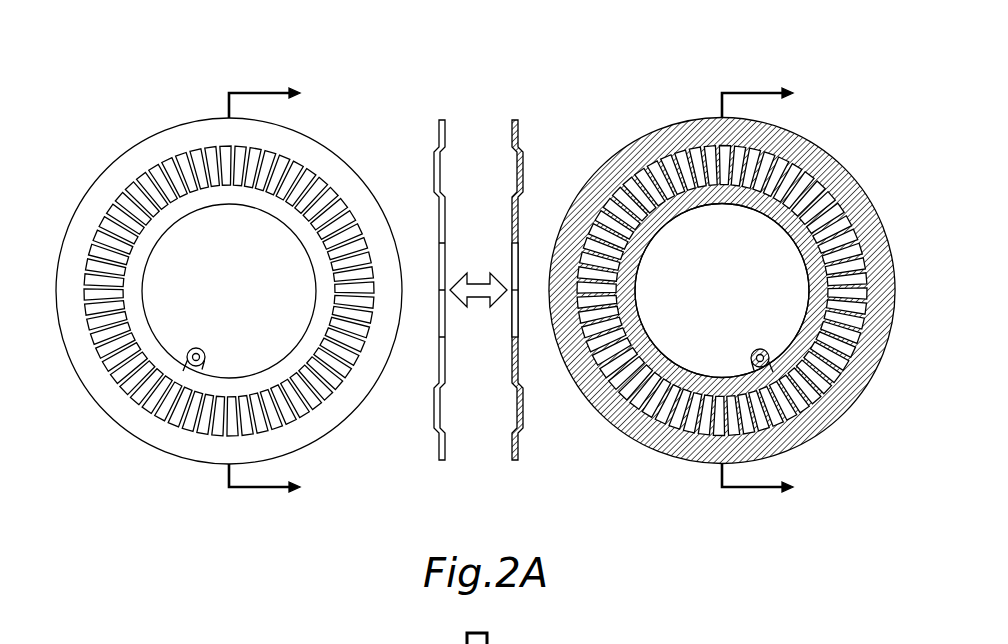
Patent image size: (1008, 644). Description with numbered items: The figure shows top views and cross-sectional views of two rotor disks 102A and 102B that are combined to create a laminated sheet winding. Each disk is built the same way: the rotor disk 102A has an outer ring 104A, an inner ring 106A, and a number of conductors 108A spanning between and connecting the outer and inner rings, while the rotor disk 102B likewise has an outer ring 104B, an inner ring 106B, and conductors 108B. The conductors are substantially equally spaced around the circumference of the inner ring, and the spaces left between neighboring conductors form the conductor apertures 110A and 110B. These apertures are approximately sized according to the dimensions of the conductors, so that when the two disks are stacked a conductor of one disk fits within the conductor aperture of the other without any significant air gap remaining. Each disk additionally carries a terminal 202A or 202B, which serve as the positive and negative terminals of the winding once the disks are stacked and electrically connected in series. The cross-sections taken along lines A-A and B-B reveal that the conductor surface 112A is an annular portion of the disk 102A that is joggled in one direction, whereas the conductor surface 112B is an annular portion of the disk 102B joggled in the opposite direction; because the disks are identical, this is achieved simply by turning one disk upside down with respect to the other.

The rotor disk 102A is at (190, 82).
The outer ring 104A is at (90, 195).
The inner ring 106A is at (132, 299).
The conductors 108A is at (187, 172).
The conductor apertures 110A is at (150, 408).
The conductor surface 112A is at (425, 173).
The terminal 202A is at (207, 363).
The rotor disk 102B is at (702, 80).
The outer ring 104B is at (622, 158).
The inner ring 106B is at (638, 310).
The conductors 108B is at (688, 172).
The conductor apertures 110B is at (673, 448).
The conductor surface 112B is at (533, 176).
The terminal 202B is at (752, 363).